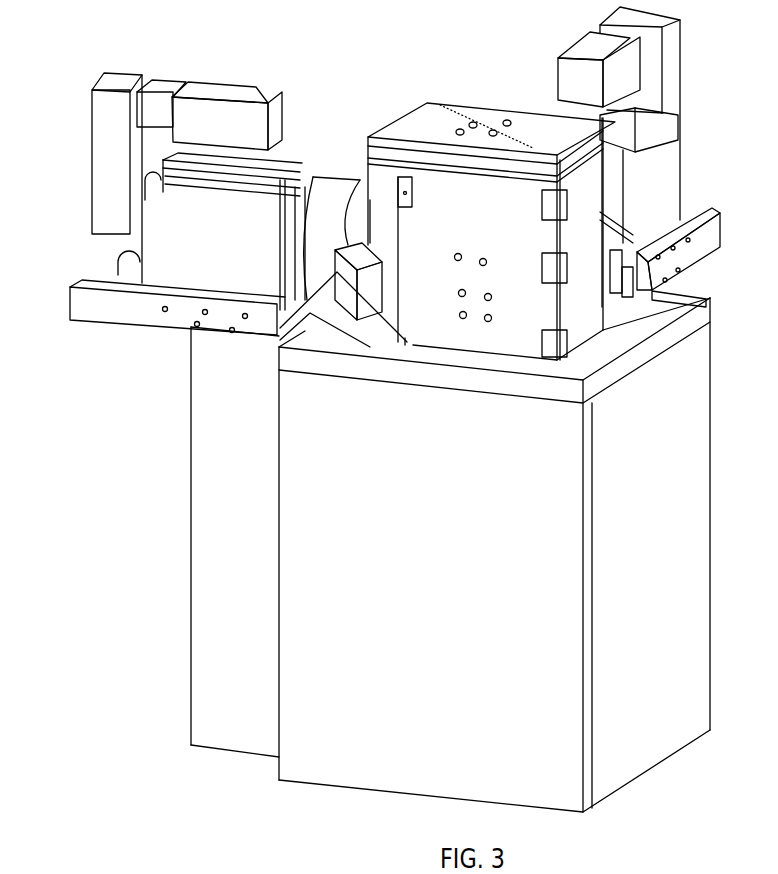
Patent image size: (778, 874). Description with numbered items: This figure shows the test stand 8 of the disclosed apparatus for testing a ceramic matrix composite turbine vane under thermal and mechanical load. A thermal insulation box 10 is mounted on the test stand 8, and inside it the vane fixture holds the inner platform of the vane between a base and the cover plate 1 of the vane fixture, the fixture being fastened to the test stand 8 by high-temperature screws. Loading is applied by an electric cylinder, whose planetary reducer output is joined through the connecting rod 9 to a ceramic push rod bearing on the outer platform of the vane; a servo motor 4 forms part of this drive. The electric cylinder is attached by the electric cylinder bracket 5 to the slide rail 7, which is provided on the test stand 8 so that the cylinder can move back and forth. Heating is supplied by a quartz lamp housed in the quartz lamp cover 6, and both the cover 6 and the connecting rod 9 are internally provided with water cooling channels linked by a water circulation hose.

The cover plate of vane fixture 1 is at (482, 258).
The servo motor 4 is at (235, 113).
The electric cylinder bracket 5 is at (185, 192).
The quartz lamp cover 6 is at (357, 285).
The slide rail 7 is at (261, 312).
The test stand 8 is at (303, 560).
The connecting rod 9 is at (345, 205).
The thermal insulation box 10 is at (445, 190).